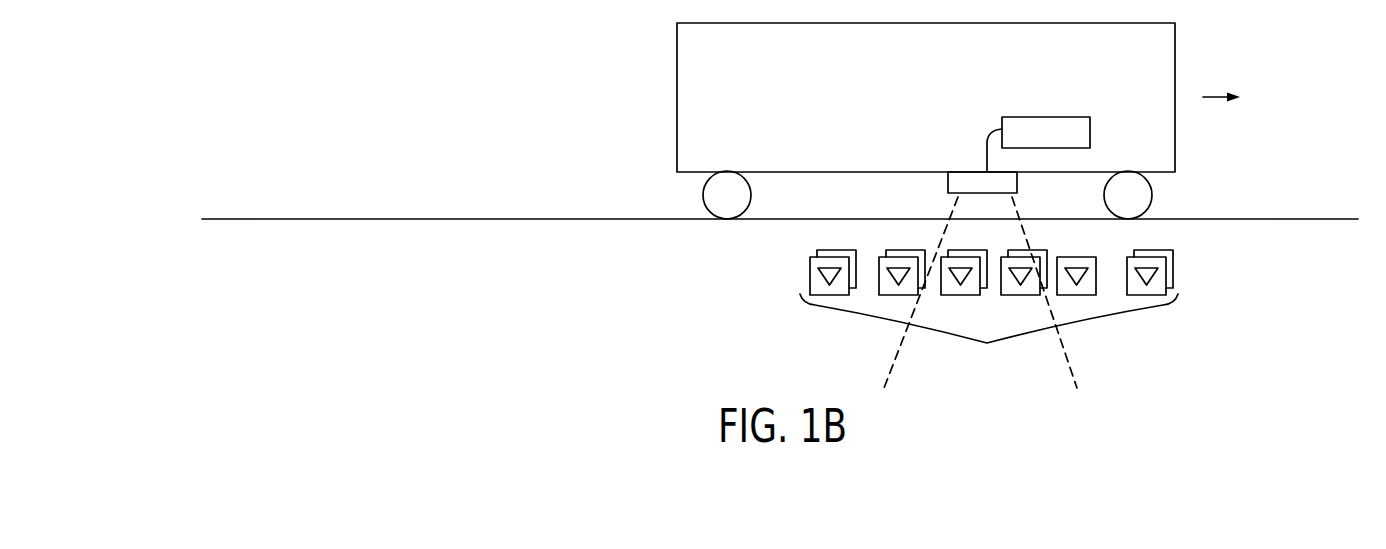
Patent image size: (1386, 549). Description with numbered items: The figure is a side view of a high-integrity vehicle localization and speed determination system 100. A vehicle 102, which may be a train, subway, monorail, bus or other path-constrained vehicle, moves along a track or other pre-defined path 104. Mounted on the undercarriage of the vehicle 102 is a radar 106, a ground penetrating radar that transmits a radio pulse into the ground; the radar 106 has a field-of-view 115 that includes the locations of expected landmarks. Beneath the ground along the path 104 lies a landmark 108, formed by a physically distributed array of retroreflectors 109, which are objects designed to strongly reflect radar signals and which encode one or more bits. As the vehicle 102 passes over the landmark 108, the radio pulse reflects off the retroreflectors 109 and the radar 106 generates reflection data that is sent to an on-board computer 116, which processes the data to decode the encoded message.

The high-integrity vehicle localization and speed determination system 100 is at (586, 107).
The vehicle 102 is at (797, 112).
The pre-defined path 104 is at (1264, 219).
The radar 106 is at (947, 183).
The landmark 108 is at (989, 278).
The retroreflectors 109 is at (967, 249).
The field-of-view 115 is at (887, 371).
The on-board computer 116 is at (1055, 117).